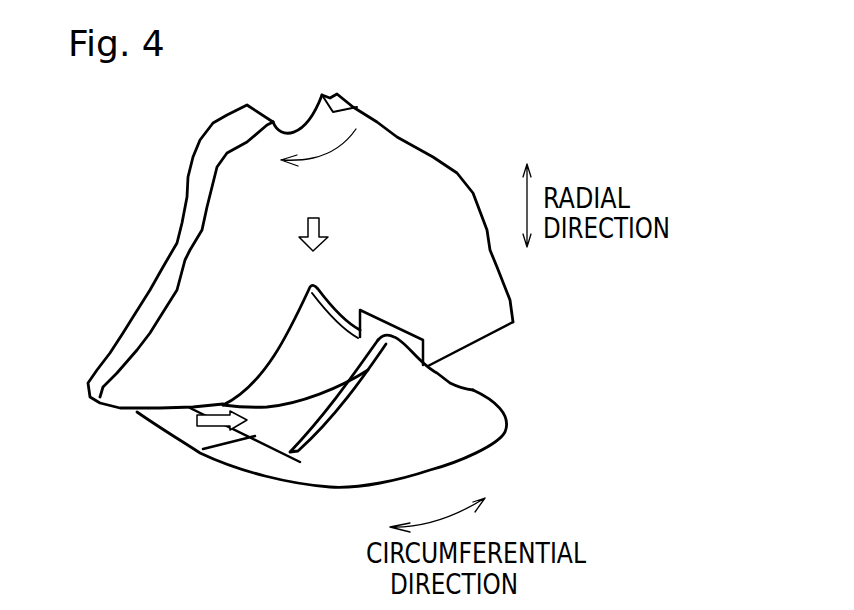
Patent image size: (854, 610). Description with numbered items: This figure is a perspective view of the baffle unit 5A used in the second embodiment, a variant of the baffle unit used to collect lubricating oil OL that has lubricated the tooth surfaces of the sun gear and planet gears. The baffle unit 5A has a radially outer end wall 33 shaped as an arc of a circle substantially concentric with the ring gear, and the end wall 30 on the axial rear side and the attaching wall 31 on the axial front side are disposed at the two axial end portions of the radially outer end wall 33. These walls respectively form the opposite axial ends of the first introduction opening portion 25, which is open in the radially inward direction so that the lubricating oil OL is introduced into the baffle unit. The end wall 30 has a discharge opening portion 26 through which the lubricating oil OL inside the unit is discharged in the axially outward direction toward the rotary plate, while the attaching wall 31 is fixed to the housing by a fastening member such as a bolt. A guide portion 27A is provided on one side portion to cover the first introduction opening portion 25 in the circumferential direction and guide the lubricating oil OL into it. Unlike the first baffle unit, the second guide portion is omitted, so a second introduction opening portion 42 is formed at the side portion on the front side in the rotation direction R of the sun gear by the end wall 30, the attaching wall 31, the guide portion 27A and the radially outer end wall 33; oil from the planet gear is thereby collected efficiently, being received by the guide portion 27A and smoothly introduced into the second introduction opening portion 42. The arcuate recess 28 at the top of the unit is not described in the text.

The baffle unit 5A is at (473, 155).
The first introduction opening portion 25 is at (368, 325).
The discharge opening portion 26 is at (308, 337).
The guide portion 27A is at (412, 335).
The arcuate recess 28 is at (303, 126).
The end wall 30 is at (230, 257).
The attaching wall 31 is at (418, 420).
The radially outer end wall 33 is at (305, 420).
The second introduction opening portion 42 is at (282, 425).
The rotation direction R is at (360, 107).
The lubricating oil OL is at (327, 230).